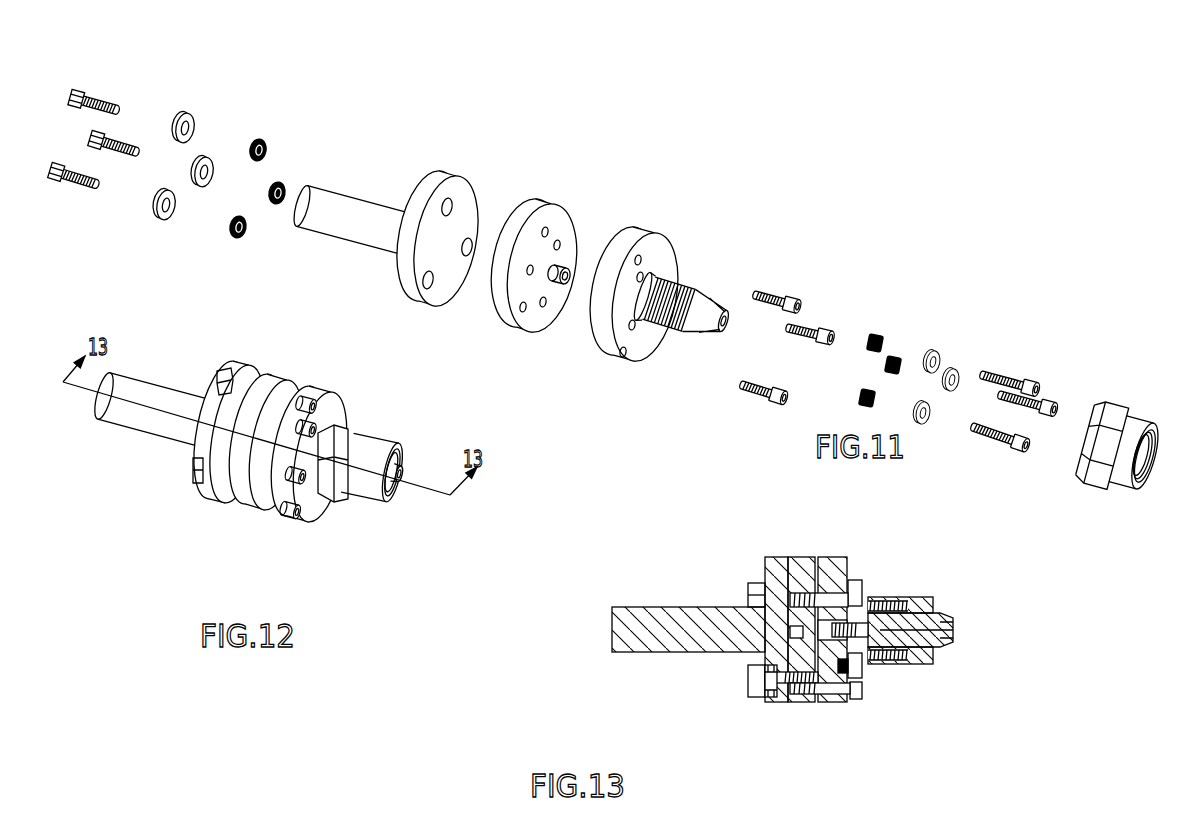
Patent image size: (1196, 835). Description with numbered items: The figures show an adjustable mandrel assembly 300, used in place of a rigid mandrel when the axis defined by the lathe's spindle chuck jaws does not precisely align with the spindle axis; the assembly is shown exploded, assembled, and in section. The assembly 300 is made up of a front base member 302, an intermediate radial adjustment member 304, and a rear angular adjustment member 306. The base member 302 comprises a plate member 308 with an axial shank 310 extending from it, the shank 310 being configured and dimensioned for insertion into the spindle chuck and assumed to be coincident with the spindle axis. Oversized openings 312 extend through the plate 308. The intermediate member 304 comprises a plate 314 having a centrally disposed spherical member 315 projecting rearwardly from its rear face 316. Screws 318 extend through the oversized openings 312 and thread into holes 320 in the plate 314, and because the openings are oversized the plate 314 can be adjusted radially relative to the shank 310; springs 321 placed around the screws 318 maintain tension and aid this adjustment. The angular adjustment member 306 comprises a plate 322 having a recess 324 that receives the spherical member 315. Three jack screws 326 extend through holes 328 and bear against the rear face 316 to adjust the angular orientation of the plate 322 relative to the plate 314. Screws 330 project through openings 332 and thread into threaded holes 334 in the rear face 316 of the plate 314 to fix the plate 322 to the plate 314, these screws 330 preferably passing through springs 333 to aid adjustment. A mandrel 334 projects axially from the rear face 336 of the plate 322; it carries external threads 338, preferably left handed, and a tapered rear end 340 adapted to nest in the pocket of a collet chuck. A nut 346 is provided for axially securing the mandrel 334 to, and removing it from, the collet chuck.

In FIG. 11, the adjustable mandrel assembly 300 is at (922, 107).
In FIG. 11, the front base member 302 is at (398, 196).
In FIG. 11, the intermediate radial adjustment member 304 is at (607, 152).
In FIG. 11, the rear angular adjustment member 306 is at (731, 187).
In FIG. 11, the plate member 308 is at (410, 295).
In FIG. 12, the plate member 308 is at (212, 503).
In FIG. 13, the plate member 308 is at (777, 705).
In FIG. 11, the axial shank 310 is at (320, 230).
In FIG. 12, the axial shank 310 is at (105, 425).
In FIG. 13, the axial shank 310 is at (627, 652).
In FIG. 11, the oversized openings 312 is at (432, 285).
In FIG. 11, the plate 314 is at (548, 200).
In FIG. 12, the plate 314 is at (242, 505).
In FIG. 13, the plate 314 is at (800, 705).
In FIG. 11, the spherical member 315 is at (568, 270).
In FIG. 11, the rear face 316 is at (510, 208).
In FIG. 11, the screws 318 is at (112, 102).
In FIG. 12, the screws 318 is at (218, 385).
In FIG. 13, the screws 318 is at (747, 668).
In FIG. 11, the holes 320 is at (525, 315).
In FIG. 11, the springs 321 is at (258, 138).
In FIG. 13, the springs 321 is at (765, 697).
In FIG. 11, the plate 322 is at (647, 232).
In FIG. 12, the plate 322 is at (268, 518).
In FIG. 13, the plate 322 is at (833, 707).
In FIG. 13, the recess 324 is at (903, 625).
In FIG. 11, the jack screws 326 is at (778, 292).
In FIG. 12, the jack screws 326 is at (322, 400).
In FIG. 13, the jack screws 326 is at (857, 698).
In FIG. 11, the holes 328 is at (625, 355).
In FIG. 11, the screws 330 is at (993, 370).
In FIG. 12, the screws 330 is at (318, 420).
In FIG. 13, the screws 330 is at (855, 657).
In FIG. 11, the openings 332 is at (633, 327).
In FIG. 11, the springs 333 is at (877, 335).
In FIG. 13, the springs 333 is at (858, 667).
In FIG. 11, the mandrel 334 is at (695, 297).
In FIG. 11, the rear face 336 is at (655, 327).
In FIG. 11, the external threads 338 is at (675, 288).
In FIG. 11, the tapered rear end 340 is at (723, 305).
In FIG. 12, the tapered rear end 340 is at (387, 497).
In FIG. 11, the nut 346 is at (1117, 403).
In FIG. 12, the nut 346 is at (345, 492).
In FIG. 13, the nut 346 is at (880, 593).